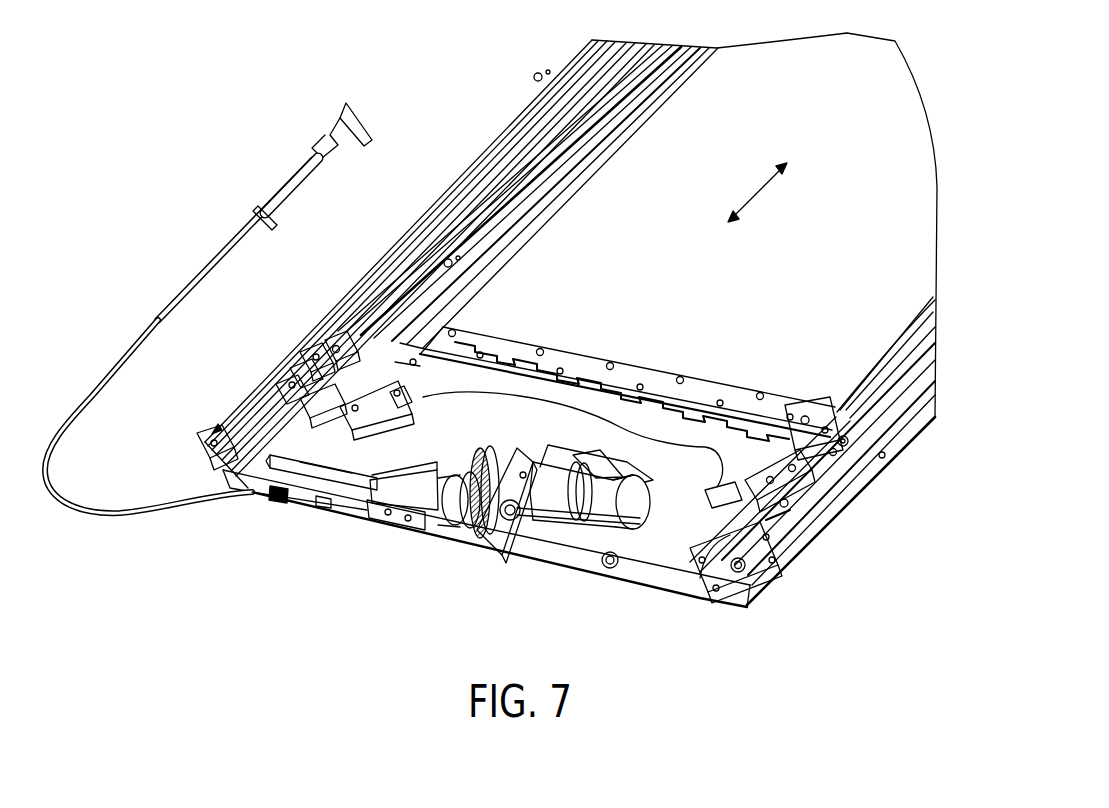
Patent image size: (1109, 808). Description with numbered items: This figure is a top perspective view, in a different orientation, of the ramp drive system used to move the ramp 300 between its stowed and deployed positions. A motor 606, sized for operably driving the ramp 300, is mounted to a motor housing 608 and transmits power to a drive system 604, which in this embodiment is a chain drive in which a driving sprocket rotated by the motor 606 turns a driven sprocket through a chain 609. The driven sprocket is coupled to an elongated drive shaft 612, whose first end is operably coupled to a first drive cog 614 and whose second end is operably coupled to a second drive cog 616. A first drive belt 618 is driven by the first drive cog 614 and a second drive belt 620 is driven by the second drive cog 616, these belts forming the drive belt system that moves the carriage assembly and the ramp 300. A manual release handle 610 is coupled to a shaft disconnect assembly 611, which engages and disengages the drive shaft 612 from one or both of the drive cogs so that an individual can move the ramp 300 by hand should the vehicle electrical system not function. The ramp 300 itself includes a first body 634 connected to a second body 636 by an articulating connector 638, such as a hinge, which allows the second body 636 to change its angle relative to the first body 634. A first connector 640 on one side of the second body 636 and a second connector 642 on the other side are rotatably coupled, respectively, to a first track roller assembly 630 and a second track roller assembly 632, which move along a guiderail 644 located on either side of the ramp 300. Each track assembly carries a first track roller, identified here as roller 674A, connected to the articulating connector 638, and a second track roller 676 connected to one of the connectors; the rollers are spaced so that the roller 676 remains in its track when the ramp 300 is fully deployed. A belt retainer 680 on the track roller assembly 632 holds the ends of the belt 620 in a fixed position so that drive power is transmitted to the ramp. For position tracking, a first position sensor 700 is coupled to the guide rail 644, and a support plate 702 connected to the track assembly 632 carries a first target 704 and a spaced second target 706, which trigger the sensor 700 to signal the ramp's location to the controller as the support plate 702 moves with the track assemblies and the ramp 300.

The ramp 300 is at (670, 146).
The drive system 604 is at (510, 440).
The motor 606 is at (633, 514).
The motor housing 608 is at (563, 462).
The chain 609 is at (477, 533).
The manual release handle 610 is at (186, 272).
The shaft disconnect assembly 611 is at (450, 527).
The drive shaft 612 is at (355, 479).
The first drive cog 614 is at (722, 605).
The second drive cog 616 is at (216, 430).
The first drive belt 618 is at (740, 532).
The second drive belt 620 is at (262, 424).
The first track roller assembly 630 is at (796, 440).
The second track roller assembly 632 is at (335, 346).
The first body 634 is at (730, 140).
The second body 636 is at (413, 360).
The articulating connector 638 is at (545, 352).
The first connector 640 is at (715, 494).
The second connector 642 is at (406, 424).
The guiderail 644 is at (446, 262).
The first track roller 674A is at (850, 445).
The second track roller 676 is at (788, 503).
The belt retainer 680 is at (310, 352).
The first position sensor 700 is at (782, 516).
The support plate 702 is at (333, 424).
The first target 704 is at (268, 496).
The second target 706 is at (344, 358).